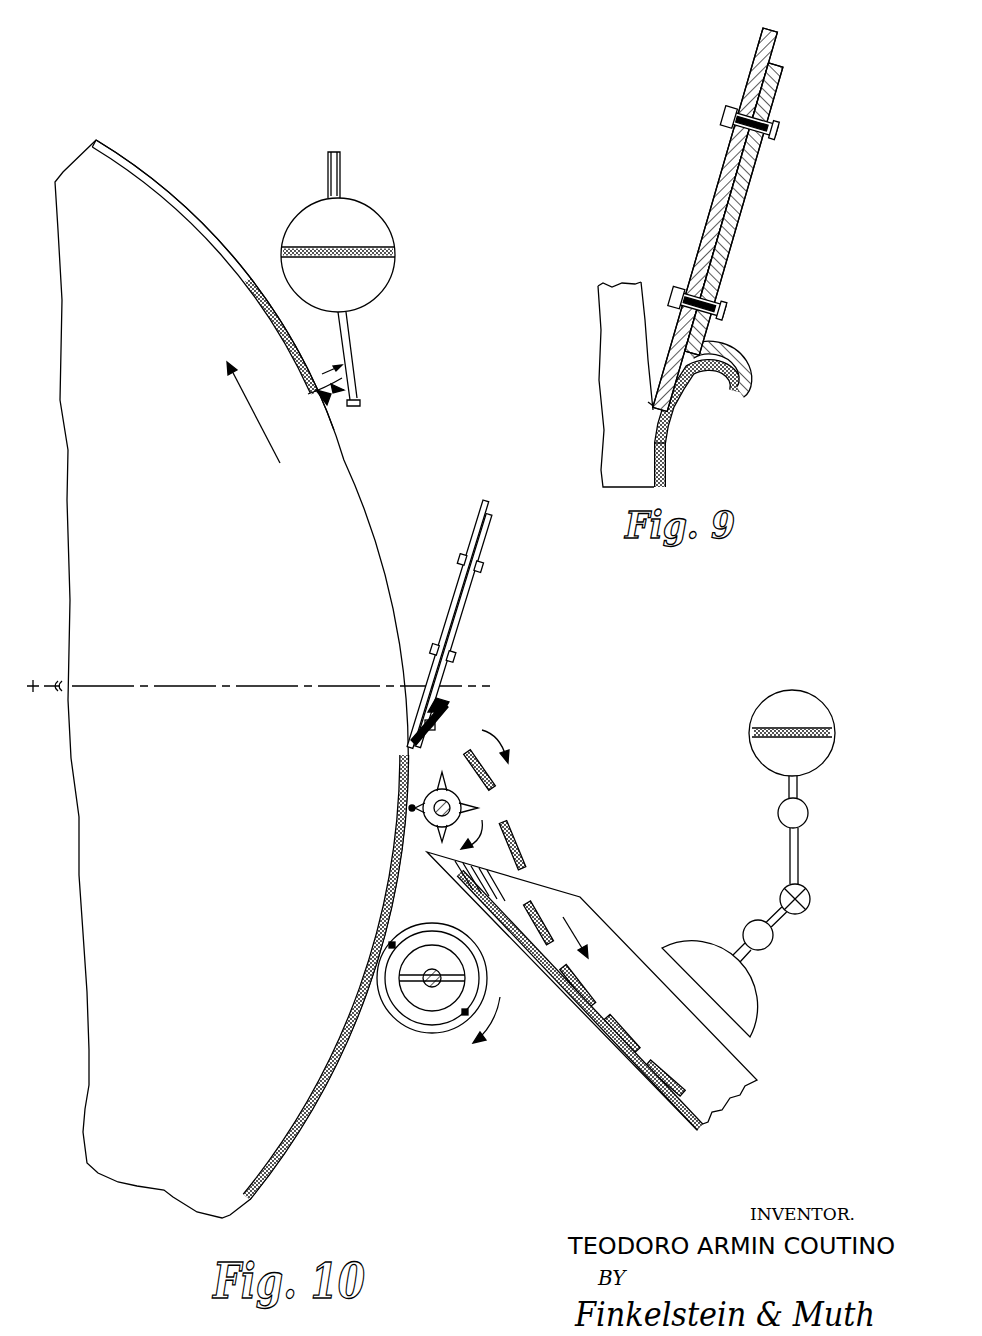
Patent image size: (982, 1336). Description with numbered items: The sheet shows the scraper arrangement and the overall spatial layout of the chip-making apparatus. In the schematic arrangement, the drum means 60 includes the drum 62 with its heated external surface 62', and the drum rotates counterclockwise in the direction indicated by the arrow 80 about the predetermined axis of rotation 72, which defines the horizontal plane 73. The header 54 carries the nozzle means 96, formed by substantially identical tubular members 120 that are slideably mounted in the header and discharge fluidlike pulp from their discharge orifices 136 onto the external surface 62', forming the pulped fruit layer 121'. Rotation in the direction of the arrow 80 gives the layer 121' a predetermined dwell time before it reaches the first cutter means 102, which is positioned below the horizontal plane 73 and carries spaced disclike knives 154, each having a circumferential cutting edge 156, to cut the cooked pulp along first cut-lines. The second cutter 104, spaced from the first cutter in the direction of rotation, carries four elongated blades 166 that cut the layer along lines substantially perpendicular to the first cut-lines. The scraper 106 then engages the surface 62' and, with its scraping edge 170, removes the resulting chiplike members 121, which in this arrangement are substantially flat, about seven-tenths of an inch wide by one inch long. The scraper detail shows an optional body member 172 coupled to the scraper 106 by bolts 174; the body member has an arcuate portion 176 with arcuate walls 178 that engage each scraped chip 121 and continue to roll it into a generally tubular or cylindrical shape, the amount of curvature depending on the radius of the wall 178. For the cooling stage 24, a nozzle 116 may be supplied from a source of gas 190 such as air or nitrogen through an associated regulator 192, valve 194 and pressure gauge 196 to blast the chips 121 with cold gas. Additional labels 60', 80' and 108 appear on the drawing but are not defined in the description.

In FIG. 10, the cooling stage 24 is at (875, 676).
In FIG. 10, the header 54 is at (430, 199).
In FIG. 10, the drum means 60 is at (231, 679).
In FIG. 10, the direction of material flow 60' is at (491, 844).
In FIG. 9, the drum 62 is at (601, 383).
In FIG. 10, the drum 62 is at (218, 262).
In FIG. 9, the heated external surface 62' is at (651, 317).
In FIG. 10, the heated external surface 62' is at (201, 270).
In FIG. 10, the axis of rotation 72 is at (45, 664).
In FIG. 10, the horizontal plane 73 is at (267, 671).
In FIG. 10, the direction of rotation arrow 80 is at (246, 412).
In FIG. 10, the direction of wheel rotation 80' is at (509, 1020).
In FIG. 10, the nozzle means 96 is at (335, 150).
In FIG. 10, the first cutter means 102 is at (453, 1037).
In FIG. 10, the second cutter 104 is at (428, 816).
In FIG. 9, the scraper 106 is at (876, 57).
In FIG. 10, the scraper 106 is at (545, 609).
In FIG. 10, the star wheel 108 is at (490, 782).
In FIG. 10, the nozzle 116 is at (707, 941).
In FIG. 10, the tubular members 120 is at (326, 167).
In FIG. 9, the chips 121 is at (703, 426).
In FIG. 10, the chips 121 is at (554, 896).
In FIG. 10, the pulped fruit layer 121' is at (295, 687).
In FIG. 10, the discharge orifice 136 is at (343, 362).
In FIG. 10, the disclike knives 154 is at (408, 1030).
In FIG. 10, the circumferential cutting edge 156 is at (380, 1008).
In FIG. 10, the elongated blades 166 is at (415, 806).
In FIG. 9, the scraping edge 170 is at (653, 408).
In FIG. 9, the body member 172 is at (742, 203).
In FIG. 9, the bolts 174 is at (772, 127).
In FIG. 9, the arcuate portion 176 is at (745, 356).
In FIG. 9, the arcuate walls 178 is at (734, 395).
In FIG. 10, the source of gas 190 is at (848, 702).
In FIG. 10, the regulator 192 is at (808, 811).
In FIG. 10, the valve 194 is at (808, 889).
In FIG. 10, the pressure gauge 196 is at (762, 895).